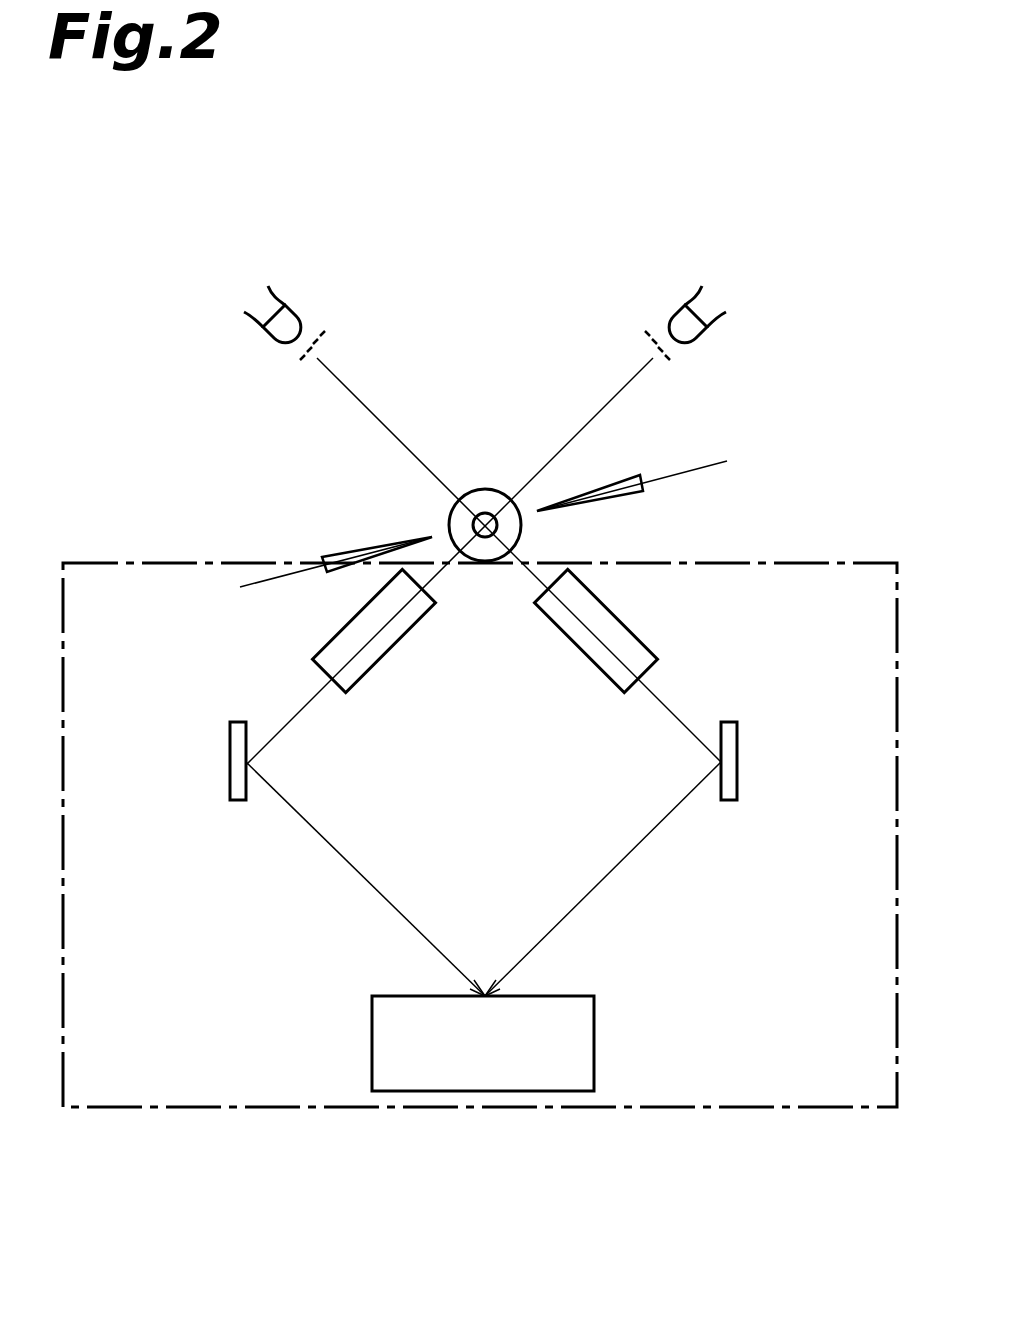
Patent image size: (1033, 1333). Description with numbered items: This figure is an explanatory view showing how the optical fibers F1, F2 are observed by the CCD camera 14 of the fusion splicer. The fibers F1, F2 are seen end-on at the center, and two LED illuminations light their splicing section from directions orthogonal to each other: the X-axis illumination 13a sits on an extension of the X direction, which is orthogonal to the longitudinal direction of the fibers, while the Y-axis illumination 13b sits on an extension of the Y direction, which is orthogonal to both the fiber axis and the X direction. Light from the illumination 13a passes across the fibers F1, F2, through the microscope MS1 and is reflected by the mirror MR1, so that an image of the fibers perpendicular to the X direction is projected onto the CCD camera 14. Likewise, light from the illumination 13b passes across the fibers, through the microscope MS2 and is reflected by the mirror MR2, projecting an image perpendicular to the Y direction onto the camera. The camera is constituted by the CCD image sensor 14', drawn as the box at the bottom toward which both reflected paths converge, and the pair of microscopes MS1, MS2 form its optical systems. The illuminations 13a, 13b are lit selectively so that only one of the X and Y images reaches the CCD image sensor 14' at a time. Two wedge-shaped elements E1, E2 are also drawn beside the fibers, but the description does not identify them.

The CCD camera 14 is at (480, 875).
The CCD image sensor 14' is at (483, 1083).
The X-axis illumination 13a is at (675, 304).
The Y-axis illumination 13b is at (295, 304).
The X direction X is at (449, 561).
The Y direction Y is at (519, 560).
The optical fiber F1 is at (480, 461).
The optical fiber F2 is at (485, 525).
The knife edge E1 is at (338, 554).
The knife edge E2 is at (630, 473).
The microscope MS1 is at (380, 660).
The microscope MS2 is at (638, 638).
The mirror MR1 is at (228, 770).
The mirror MR2 is at (740, 771).